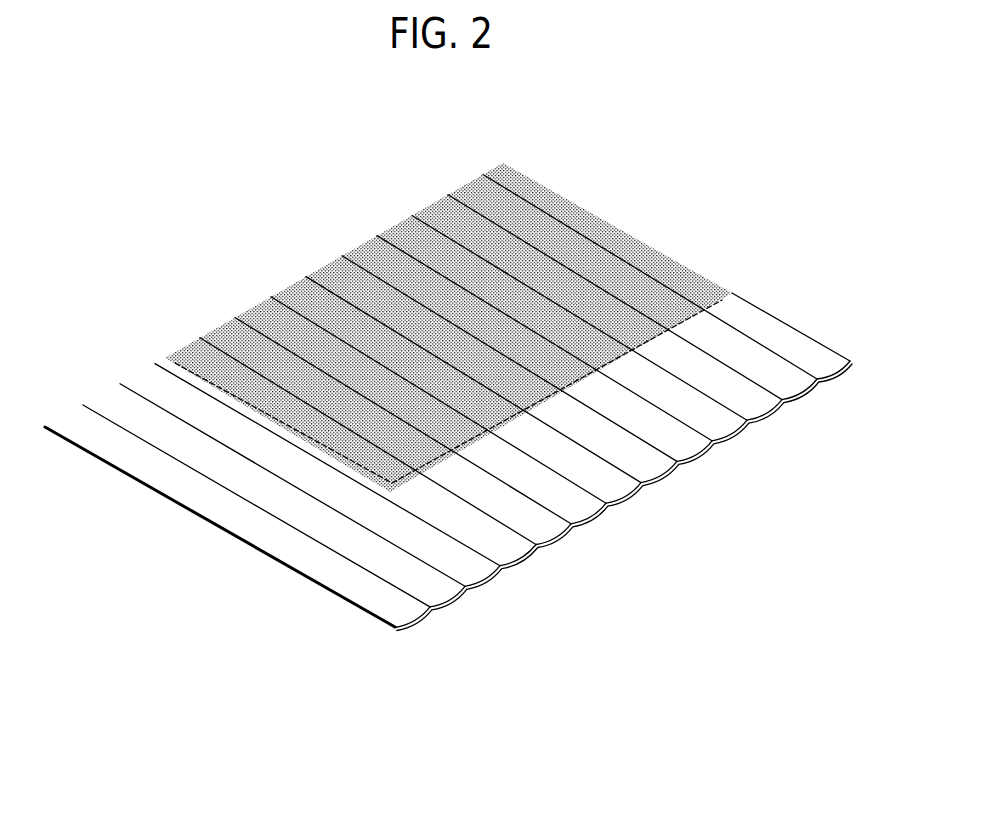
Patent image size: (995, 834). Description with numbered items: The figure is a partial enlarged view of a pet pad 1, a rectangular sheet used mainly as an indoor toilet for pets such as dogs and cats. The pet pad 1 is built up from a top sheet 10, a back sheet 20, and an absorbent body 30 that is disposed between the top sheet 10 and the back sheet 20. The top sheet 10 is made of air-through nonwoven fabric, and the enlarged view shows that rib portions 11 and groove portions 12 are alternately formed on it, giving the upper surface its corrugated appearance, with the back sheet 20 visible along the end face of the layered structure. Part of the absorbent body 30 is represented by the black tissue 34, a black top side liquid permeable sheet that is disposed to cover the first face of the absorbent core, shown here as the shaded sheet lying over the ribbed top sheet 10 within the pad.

The pet pad 1 is at (448, 432).
The top sheet 10 is at (448, 438).
The rib portions 11 is at (452, 596).
The groove portions 12 is at (470, 583).
The back sheet 20 is at (560, 533).
The absorbent body 30 is at (448, 327).
The black tissue 34 is at (260, 315).